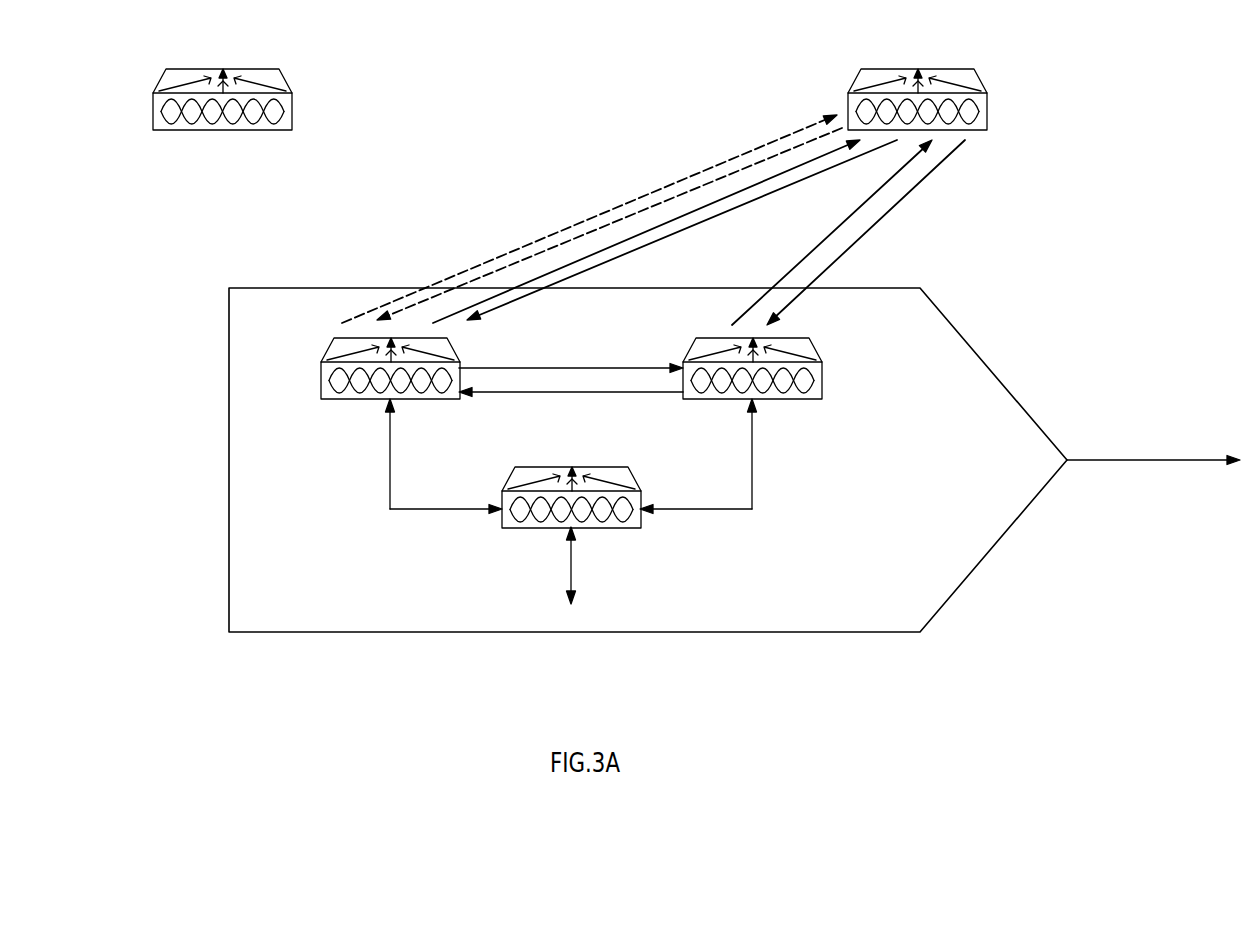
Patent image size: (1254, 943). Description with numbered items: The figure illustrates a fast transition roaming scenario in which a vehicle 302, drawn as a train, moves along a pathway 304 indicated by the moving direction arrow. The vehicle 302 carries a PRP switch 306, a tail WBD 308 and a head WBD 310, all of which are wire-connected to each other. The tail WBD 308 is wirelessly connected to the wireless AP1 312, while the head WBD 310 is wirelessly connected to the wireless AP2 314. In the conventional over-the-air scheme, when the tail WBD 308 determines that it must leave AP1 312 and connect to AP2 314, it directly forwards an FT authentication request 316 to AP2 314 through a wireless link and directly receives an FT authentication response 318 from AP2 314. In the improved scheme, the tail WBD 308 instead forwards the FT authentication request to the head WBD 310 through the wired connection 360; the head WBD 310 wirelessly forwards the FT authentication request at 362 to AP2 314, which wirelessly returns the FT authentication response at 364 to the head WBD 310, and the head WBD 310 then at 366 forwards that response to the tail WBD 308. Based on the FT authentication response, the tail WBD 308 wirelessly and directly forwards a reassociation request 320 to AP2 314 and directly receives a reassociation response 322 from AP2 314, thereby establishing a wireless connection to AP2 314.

The vehicle 302 is at (885, 632).
The pathway 304 is at (1088, 462).
The PRP switch 306 is at (519, 528).
The tail WBD 308 is at (321, 380).
The head WBD 310 is at (822, 380).
The AP1 312 is at (153, 112).
The AP2 314 is at (987, 112).
The FT authentication request 316 is at (358, 318).
The FT authentication response 318 is at (842, 128).
The reassociation request 320 is at (450, 318).
The reassociation response 322 is at (770, 194).
The wired connection 360 is at (603, 367).
The wireless forwarding of FT authentication request 362 is at (801, 262).
The wireless return of FT authentication response 364 is at (856, 244).
The forwarding of FT authentication response 366 is at (541, 393).